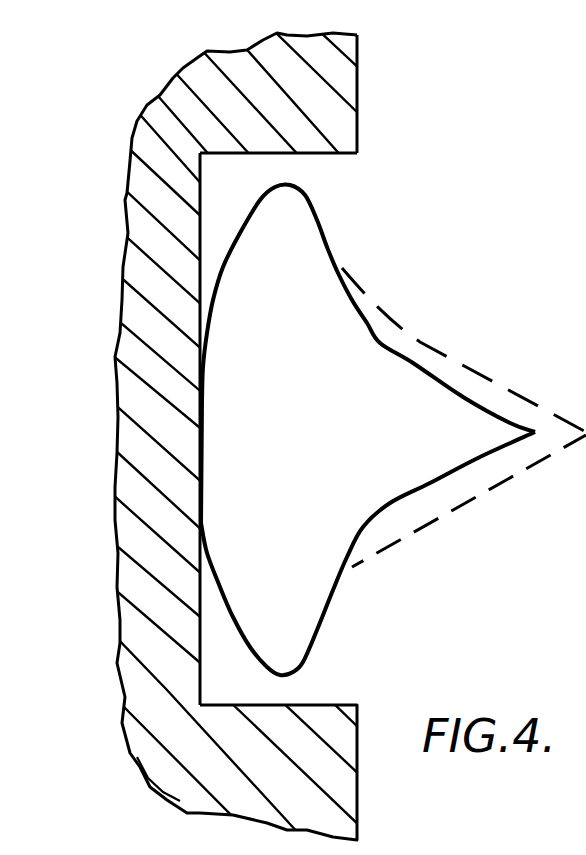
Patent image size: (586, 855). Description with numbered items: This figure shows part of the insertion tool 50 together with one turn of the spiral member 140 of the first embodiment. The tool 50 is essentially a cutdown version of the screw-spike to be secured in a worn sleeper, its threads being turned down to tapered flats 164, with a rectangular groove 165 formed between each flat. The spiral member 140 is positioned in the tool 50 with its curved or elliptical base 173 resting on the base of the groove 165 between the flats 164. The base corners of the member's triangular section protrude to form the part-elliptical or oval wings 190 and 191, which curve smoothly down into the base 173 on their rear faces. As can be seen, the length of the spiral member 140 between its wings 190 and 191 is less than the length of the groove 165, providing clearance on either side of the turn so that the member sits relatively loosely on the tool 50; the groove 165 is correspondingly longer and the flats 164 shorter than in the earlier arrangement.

The insertion tool 50 is at (135, 128).
The tapered flats 164 is at (360, 103).
The rectangular groove 165 is at (328, 156).
The base 173 is at (201, 422).
The wing 190 is at (313, 200).
The wing 191 is at (293, 673).
The spiral member 140 is at (378, 337).